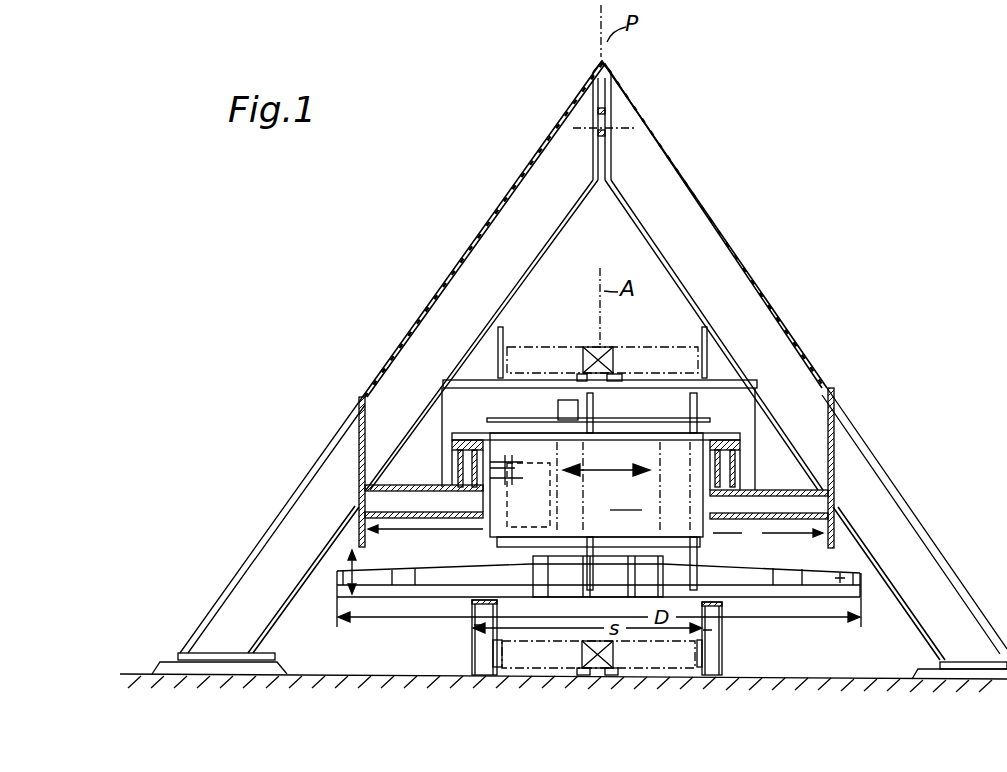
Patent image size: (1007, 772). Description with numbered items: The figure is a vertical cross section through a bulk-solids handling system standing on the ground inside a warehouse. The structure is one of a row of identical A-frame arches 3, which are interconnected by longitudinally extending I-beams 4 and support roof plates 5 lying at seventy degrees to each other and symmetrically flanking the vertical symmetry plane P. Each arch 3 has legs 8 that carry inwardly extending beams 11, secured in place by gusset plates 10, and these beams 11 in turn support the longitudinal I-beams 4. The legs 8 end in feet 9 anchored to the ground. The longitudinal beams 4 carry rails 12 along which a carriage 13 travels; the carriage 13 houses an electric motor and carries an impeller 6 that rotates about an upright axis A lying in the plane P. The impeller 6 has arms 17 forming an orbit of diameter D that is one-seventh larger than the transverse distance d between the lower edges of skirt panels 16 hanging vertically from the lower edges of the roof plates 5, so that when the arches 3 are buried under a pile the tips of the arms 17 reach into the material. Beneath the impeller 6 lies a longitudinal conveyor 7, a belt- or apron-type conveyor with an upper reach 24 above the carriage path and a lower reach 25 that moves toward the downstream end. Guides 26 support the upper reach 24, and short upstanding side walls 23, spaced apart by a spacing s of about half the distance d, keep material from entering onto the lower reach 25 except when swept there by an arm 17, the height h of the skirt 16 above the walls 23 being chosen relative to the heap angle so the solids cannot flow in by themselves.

The A-frame arch 3 is at (909, 500).
The longitudinal I-beam 4 is at (390, 450).
The roof plate 5 is at (522, 170).
The impeller 6 is at (560, 582).
The longitudinal conveyor 7 is at (724, 659).
The leg 8 is at (495, 262).
The foot 9 is at (215, 665).
The gusset plate 10 is at (433, 462).
The inwardly extending beam 11 is at (390, 500).
The rail 12 is at (473, 463).
The carriage 13 is at (596, 491).
The skirt panel 16 is at (359, 466).
The arm 17 is at (413, 580).
The side wall 23 is at (476, 648).
The upper reach 24 is at (643, 355).
The lower reach 25 is at (642, 653).
The guide 26 is at (505, 347).